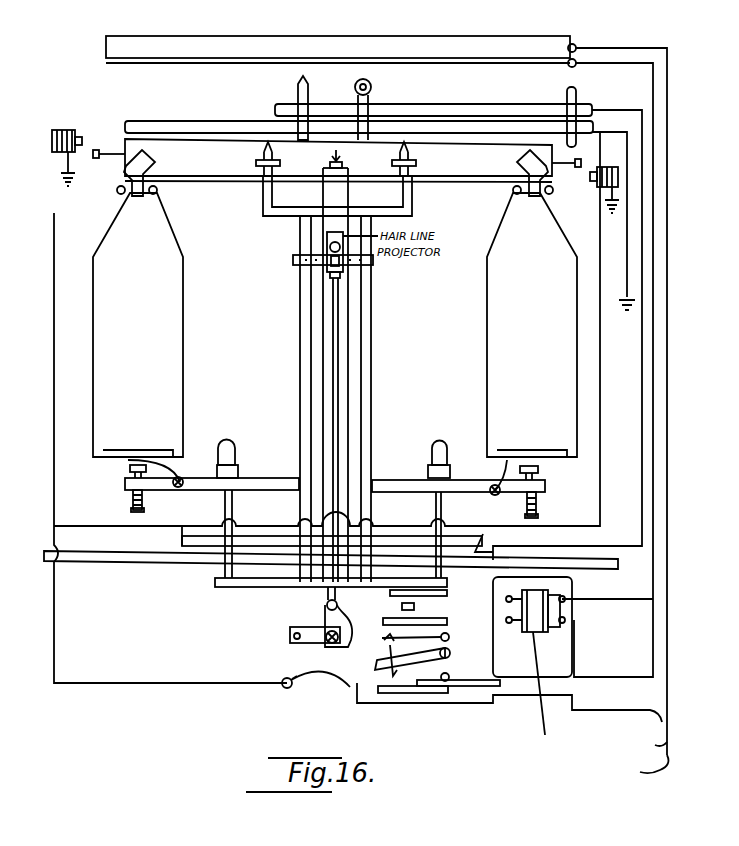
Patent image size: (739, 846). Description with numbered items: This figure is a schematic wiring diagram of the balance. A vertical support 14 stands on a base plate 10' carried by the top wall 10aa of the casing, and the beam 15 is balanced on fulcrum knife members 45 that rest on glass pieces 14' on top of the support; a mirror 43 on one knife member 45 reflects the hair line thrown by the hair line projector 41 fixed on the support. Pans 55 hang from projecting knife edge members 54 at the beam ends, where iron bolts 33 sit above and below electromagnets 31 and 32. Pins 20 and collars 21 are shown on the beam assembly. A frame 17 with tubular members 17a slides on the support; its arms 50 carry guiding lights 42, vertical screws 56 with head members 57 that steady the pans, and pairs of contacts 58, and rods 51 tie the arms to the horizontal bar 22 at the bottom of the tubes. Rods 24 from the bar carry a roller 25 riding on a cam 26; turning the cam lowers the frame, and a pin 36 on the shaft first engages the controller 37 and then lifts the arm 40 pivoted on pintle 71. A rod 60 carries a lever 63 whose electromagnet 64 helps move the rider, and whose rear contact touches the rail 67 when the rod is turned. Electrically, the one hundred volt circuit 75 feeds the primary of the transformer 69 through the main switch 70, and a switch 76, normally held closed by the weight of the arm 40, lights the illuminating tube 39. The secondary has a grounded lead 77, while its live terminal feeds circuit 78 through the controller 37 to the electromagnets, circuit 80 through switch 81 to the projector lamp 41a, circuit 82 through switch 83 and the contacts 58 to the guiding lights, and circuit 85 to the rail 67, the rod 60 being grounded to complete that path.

The illuminating tube 39 is at (172, 35).
The electromagnet 31 is at (65, 130).
The electromagnet 32 is at (612, 166).
The iron bolts 33 is at (106, 150).
The pin 20 is at (262, 153).
The collar 21 is at (256, 165).
The fulcrum knife members 45 is at (334, 152).
The mirror 43 is at (329, 165).
The glass pieces 14' is at (352, 168).
The vertical support 14 is at (352, 375).
The lever 63 is at (308, 110).
The electromagnet 64 is at (372, 86).
The rod 60 is at (453, 128).
The rail 67 is at (527, 108).
The knife edge members 54 is at (150, 178).
The beam 15 is at (204, 174).
The frame 17 is at (413, 212).
The hair line projector 41 is at (326, 240).
The lamp 41a is at (329, 258).
The tubular members 17a is at (300, 336).
The pans 55 is at (112, 450).
The contacts 58 is at (160, 458).
The guiding lights 42 is at (232, 440).
The arms 50 is at (266, 480).
The members 57 is at (128, 470).
The vertical screw 56 is at (130, 500).
The rods 51 is at (200, 534).
The base plate 10' is at (483, 530).
The circuit 85 is at (612, 546).
The top wall 10aa is at (73, 562).
The horizontal bar 22 is at (213, 584).
The rods 24 is at (326, 594).
The roller 25 is at (327, 604).
The cam 26 is at (340, 648).
The pin 36 is at (288, 635).
The controller 37 is at (292, 678).
The arm 40 is at (376, 664).
The circuit 82 is at (472, 610).
The switch 83 is at (414, 607).
The switch 81 is at (449, 638).
The pintle 71 is at (449, 665).
The switch 76 is at (420, 694).
The circuit 78 is at (493, 703).
The circuit 80 is at (496, 640).
The transformer 69 is at (538, 634).
The grounded lead 77 is at (508, 582).
The main switch 70 is at (652, 744).
The circuit 75 is at (648, 774).